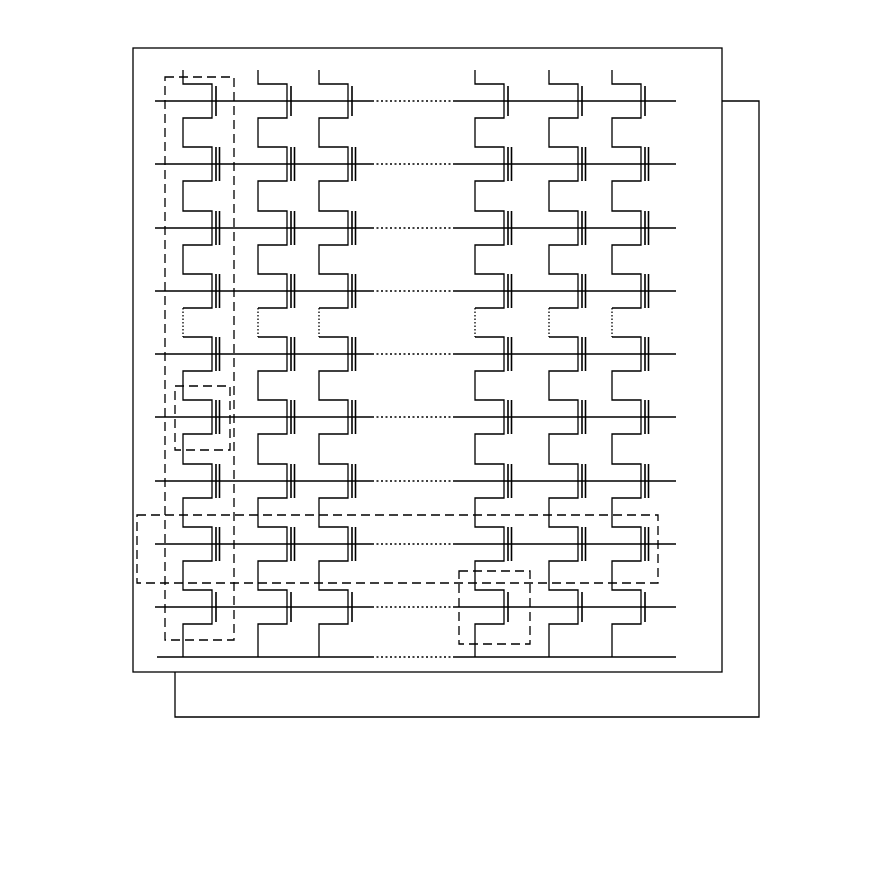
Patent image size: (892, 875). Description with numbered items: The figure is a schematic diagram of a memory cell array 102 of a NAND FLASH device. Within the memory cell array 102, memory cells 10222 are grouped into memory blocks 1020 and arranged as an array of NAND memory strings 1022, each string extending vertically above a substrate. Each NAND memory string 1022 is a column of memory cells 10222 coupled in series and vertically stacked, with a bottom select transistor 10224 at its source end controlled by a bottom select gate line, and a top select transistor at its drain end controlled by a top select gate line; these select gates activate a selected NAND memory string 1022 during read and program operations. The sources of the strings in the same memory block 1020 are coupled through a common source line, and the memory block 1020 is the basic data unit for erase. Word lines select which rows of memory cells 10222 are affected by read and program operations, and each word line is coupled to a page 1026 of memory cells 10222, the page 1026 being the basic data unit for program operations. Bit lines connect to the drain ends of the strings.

The memory cell array 102 is at (85, 26).
The memory block 1020 is at (720, 377).
The NAND memory string 1022 is at (165, 328).
The memory cell 10222 is at (175, 445).
The page 1026 is at (137, 579).
The bottom select transistor 10224 is at (495, 644).